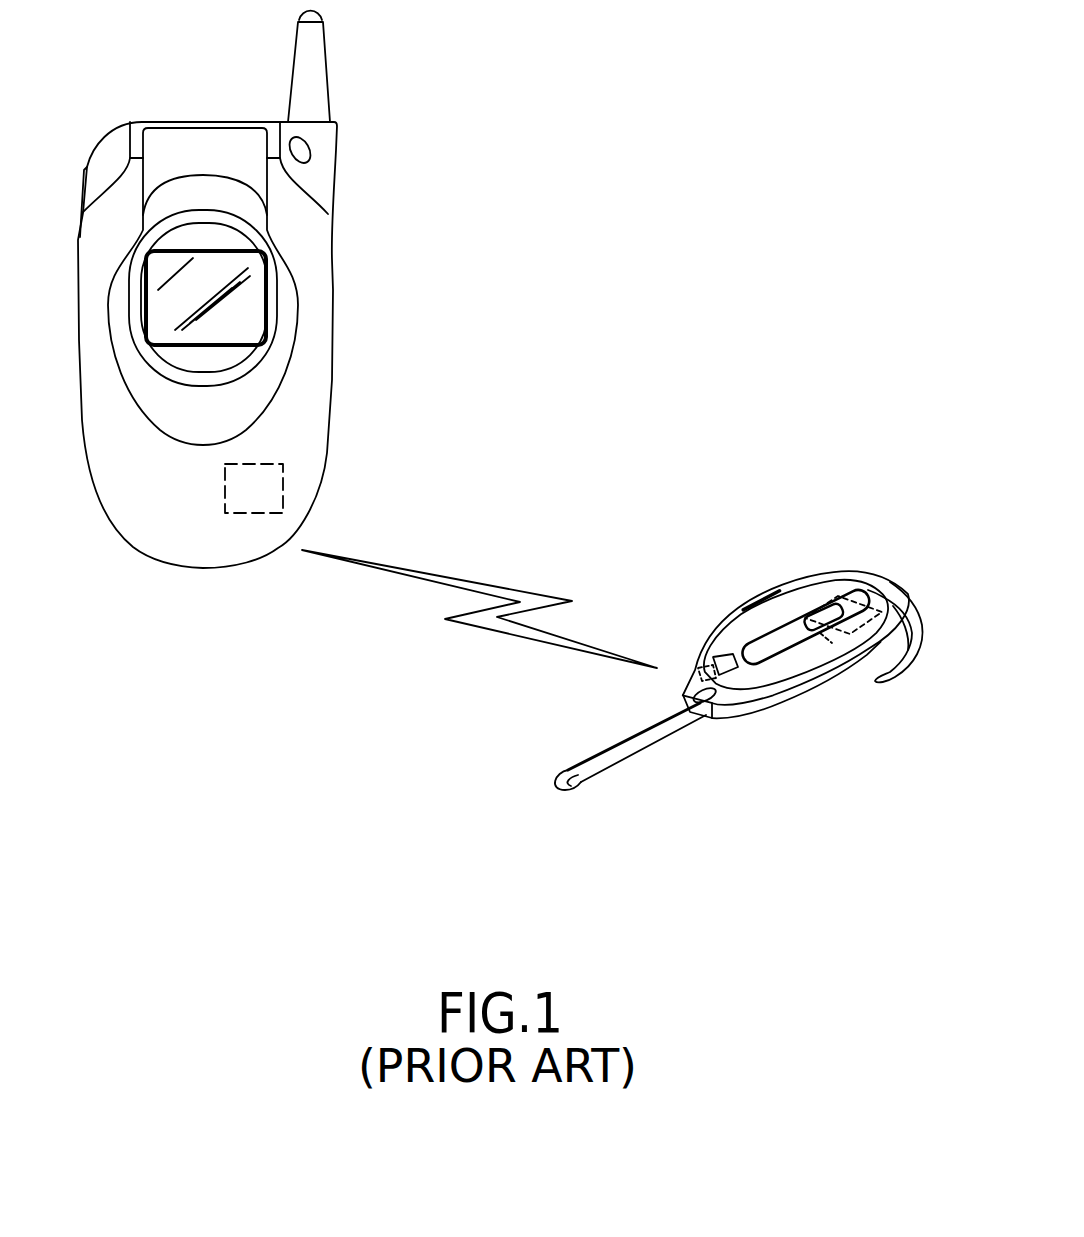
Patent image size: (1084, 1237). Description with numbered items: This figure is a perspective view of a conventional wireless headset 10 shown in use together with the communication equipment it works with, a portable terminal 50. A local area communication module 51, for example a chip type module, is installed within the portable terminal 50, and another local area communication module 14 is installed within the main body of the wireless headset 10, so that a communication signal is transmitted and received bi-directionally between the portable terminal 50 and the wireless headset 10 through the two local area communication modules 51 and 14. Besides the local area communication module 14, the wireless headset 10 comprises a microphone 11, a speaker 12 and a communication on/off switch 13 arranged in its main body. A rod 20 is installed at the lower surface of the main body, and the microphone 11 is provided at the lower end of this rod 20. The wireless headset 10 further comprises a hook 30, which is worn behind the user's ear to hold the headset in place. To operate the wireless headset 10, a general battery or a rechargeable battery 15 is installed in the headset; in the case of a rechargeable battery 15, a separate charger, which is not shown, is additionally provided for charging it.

The wireless headset 10 is at (737, 688).
The microphone 11 is at (565, 790).
The speaker 12 is at (780, 703).
The communication on/off switch 13 is at (797, 647).
The local area communication module 14 is at (715, 660).
The rechargeable battery 15 is at (842, 598).
The rod 20 is at (626, 780).
The hook 30 is at (897, 594).
The portable terminal 50 is at (239, 289).
The local area communication module 51 is at (284, 488).